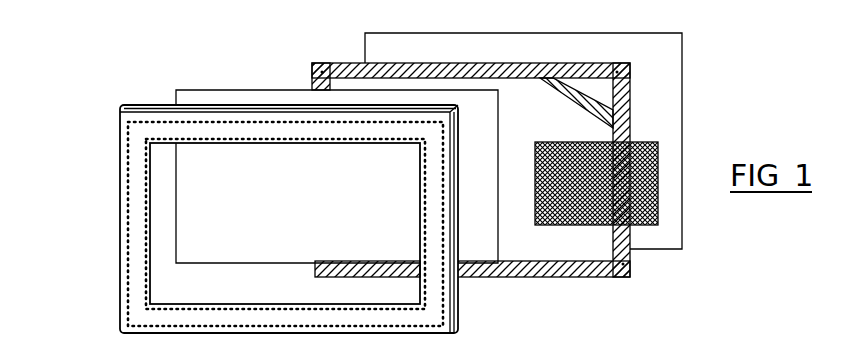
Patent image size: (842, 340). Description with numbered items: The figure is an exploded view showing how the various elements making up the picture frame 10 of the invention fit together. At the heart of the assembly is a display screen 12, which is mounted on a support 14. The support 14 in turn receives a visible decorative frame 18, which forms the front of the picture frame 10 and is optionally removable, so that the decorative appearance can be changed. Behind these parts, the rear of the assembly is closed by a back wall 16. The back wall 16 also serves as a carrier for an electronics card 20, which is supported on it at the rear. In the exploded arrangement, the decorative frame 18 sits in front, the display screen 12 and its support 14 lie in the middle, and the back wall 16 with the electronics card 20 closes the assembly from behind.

The picture frame 10 is at (396, 170).
The display screen 12 is at (484, 117).
The support 14 is at (598, 77).
The back wall 16 is at (682, 77).
The visible decorative frame 18 is at (120, 240).
The electronics card 20 is at (657, 207).